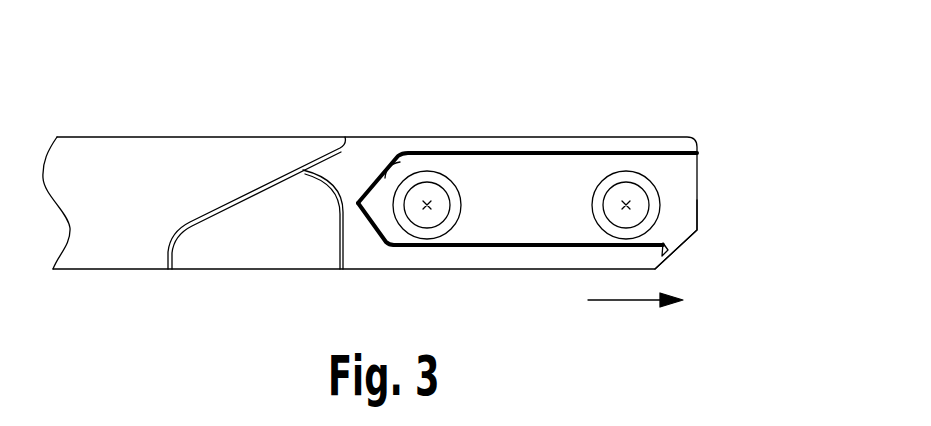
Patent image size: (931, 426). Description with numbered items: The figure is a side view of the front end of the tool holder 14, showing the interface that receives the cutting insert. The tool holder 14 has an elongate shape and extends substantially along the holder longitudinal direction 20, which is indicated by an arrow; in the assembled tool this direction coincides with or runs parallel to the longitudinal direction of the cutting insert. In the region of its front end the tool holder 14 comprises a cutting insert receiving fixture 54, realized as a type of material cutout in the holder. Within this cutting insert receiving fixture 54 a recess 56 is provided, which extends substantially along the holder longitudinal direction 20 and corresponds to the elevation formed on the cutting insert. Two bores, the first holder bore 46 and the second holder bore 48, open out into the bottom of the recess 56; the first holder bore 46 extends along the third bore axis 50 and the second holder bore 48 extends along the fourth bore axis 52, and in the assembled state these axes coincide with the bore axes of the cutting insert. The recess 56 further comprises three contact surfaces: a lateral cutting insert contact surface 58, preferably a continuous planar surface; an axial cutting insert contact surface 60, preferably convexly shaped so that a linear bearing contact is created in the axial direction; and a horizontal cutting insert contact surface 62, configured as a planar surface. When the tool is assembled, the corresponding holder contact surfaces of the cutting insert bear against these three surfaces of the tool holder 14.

The tool holder 14 is at (633, 108).
The holder longitudinal direction 20 is at (633, 301).
The first holder bore 46 is at (440, 183).
The second holder bore 48 is at (641, 176).
The third bore axis 50 is at (427, 203).
The fourth bore axis 52 is at (622, 184).
The cutting insert receiving fixture 54 is at (313, 245).
The recess 56 is at (680, 200).
The lateral cutting insert contact surface 58 is at (530, 190).
The axial cutting insert contact surface 60 is at (398, 162).
The horizontal cutting insert contact surface 62 is at (533, 241).